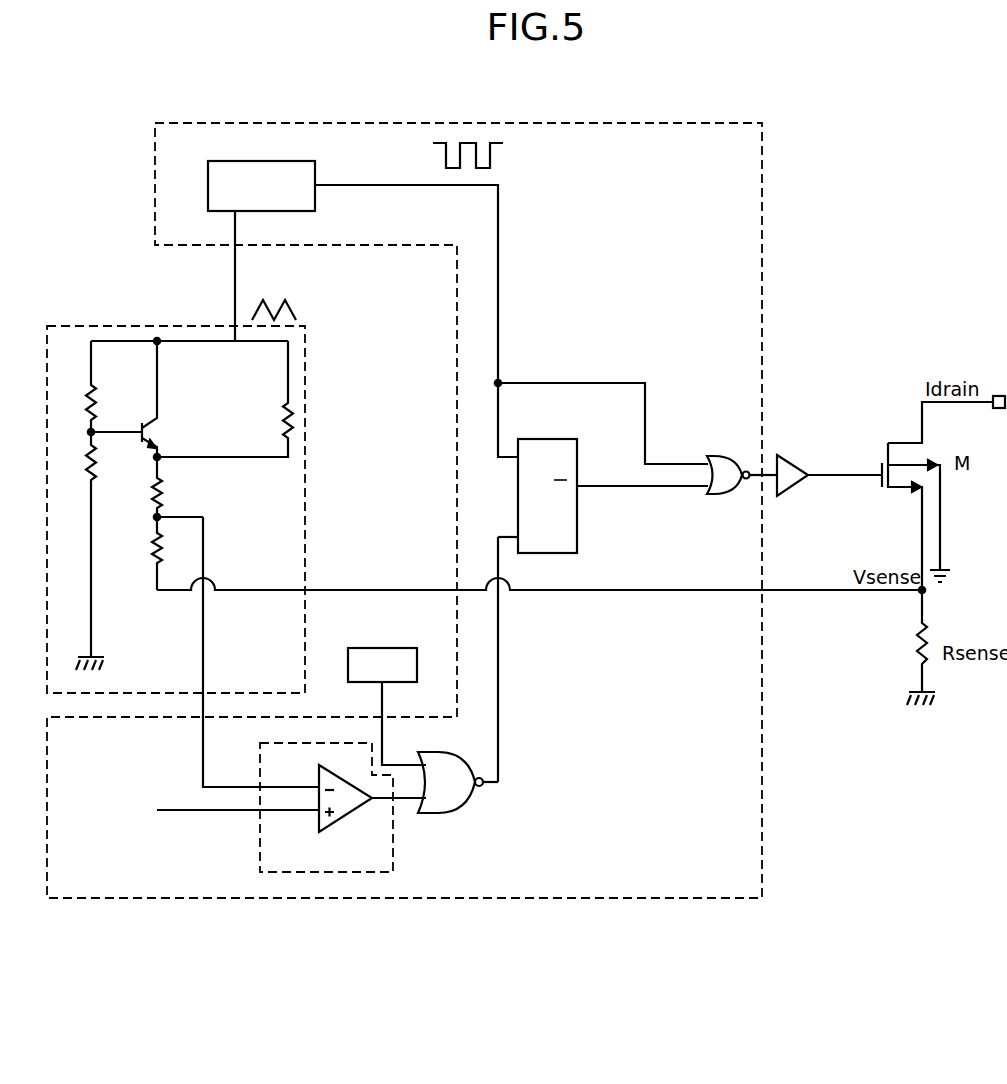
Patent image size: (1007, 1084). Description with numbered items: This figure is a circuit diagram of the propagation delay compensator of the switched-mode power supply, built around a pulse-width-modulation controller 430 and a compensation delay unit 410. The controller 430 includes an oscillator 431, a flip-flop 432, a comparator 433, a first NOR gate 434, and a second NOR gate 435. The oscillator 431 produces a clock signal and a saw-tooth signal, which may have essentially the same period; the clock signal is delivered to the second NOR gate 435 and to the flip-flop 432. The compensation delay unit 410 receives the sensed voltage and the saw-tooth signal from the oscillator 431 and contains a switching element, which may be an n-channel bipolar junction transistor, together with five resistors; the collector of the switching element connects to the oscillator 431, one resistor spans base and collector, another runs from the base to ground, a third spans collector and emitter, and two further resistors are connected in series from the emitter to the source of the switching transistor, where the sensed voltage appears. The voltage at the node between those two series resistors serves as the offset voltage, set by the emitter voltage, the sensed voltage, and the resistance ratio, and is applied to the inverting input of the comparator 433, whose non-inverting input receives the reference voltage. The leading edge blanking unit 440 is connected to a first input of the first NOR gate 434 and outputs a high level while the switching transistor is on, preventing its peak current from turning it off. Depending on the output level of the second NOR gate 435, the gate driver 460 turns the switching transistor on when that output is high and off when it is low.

The compensation delay unit 410 is at (93, 326).
The PWM controller 430 is at (763, 829).
The oscillator 431 is at (232, 161).
The PWM flip-flop 432 is at (577, 537).
The PWM comparator 433 is at (393, 858).
The first NOR gate 434 is at (462, 803).
The second NOR gate 435 is at (712, 456).
The LEB unit 440 is at (408, 648).
The gate driver 460 is at (793, 455).